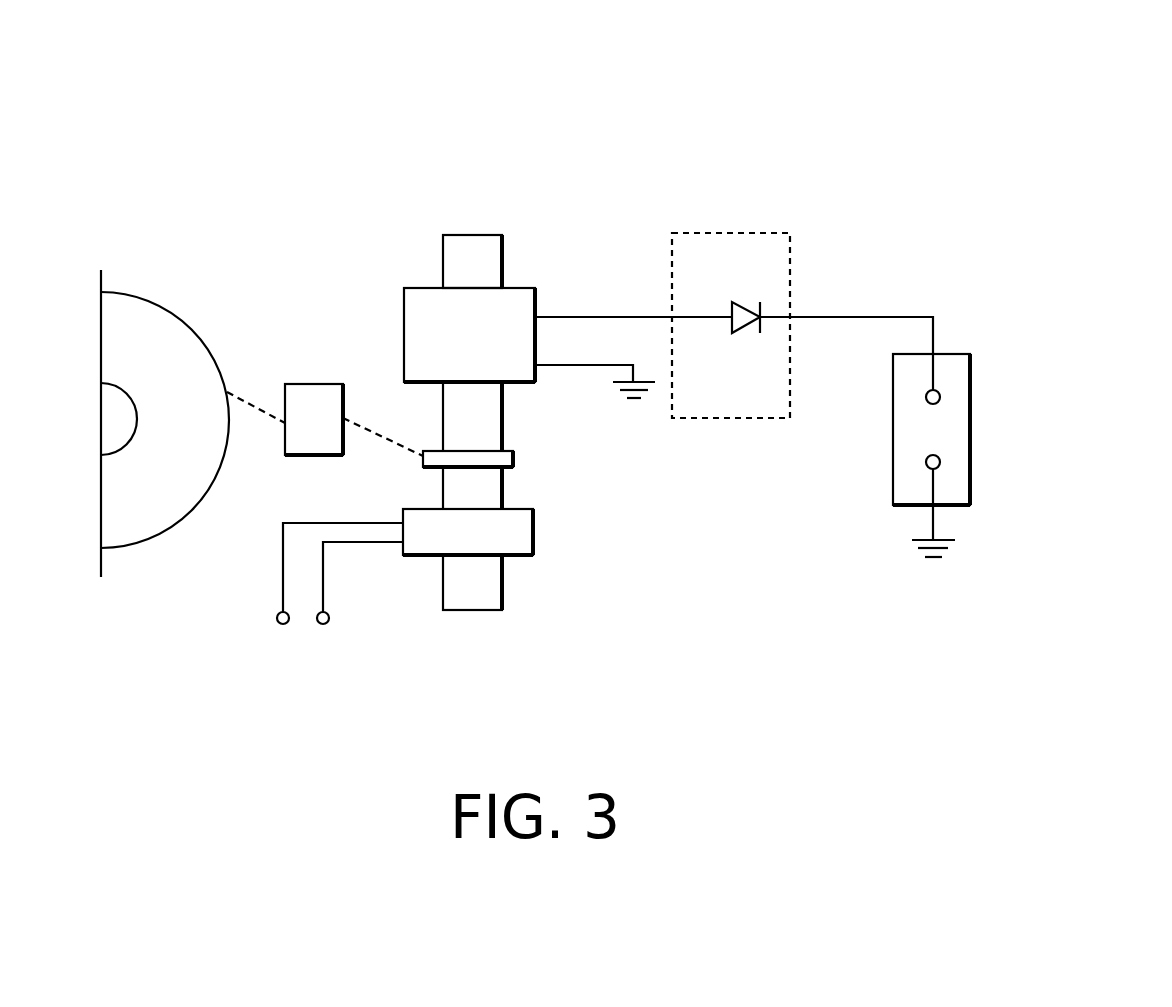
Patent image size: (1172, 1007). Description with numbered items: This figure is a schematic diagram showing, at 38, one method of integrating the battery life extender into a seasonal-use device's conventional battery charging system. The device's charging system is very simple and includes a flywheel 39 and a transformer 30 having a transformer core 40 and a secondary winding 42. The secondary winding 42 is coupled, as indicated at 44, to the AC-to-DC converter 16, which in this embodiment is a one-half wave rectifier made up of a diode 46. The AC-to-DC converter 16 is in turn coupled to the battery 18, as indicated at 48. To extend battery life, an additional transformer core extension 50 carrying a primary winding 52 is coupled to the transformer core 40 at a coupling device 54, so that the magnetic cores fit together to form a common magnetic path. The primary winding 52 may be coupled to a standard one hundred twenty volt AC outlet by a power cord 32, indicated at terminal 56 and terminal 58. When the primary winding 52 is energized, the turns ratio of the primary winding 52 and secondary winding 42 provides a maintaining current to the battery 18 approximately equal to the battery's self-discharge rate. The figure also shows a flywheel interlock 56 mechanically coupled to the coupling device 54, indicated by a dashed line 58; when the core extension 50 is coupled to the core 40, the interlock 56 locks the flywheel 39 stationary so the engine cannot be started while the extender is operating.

The battery life extender integration 38 is at (167, 122).
The flywheel 39 is at (150, 299).
The transformer 30 is at (332, 285).
The transformer core 40 is at (443, 260).
The secondary winding 42 is at (404, 340).
The coupling of secondary winding to AC-to-DC converter 44 is at (625, 317).
The AC-to-DC converter 16 is at (725, 233).
The diode 46 is at (748, 305).
The coupling of AC-to-DC converter to battery 48 is at (878, 317).
The battery 18 is at (970, 387).
The coupling device 54 is at (513, 457).
The primary winding 52 is at (533, 530).
The transformer core extension 50 is at (502, 585).
The terminal / flywheel interlock 56 is at (308, 384).
The terminal / dashed line 58 is at (372, 430).
The power cord 32 is at (255, 565).